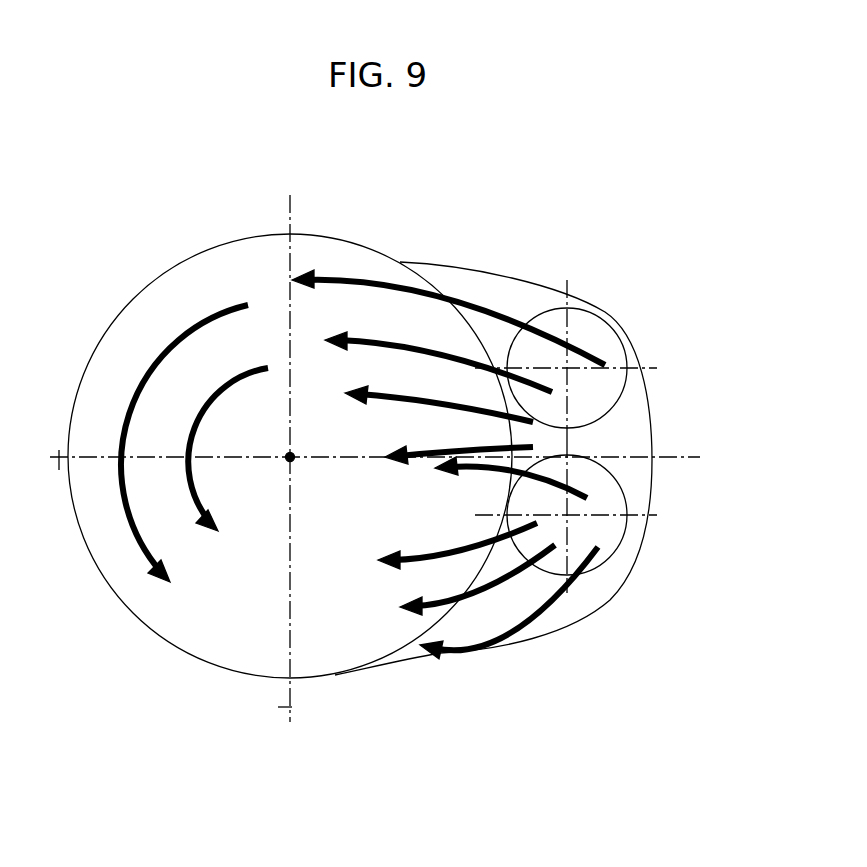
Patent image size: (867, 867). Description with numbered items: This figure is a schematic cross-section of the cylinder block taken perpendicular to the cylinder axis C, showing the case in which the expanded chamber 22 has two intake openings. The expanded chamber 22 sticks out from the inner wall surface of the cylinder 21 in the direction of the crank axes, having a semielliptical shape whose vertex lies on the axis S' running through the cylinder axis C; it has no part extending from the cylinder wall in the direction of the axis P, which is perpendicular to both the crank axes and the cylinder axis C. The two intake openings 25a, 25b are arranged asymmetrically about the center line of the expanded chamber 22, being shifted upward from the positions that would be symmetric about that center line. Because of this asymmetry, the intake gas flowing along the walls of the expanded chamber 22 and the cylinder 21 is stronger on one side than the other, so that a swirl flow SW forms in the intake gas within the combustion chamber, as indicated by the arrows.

The cylinder 21 is at (333, 653).
The expanded chamber 22 is at (597, 590).
The intake opening 25a is at (597, 398).
The intake opening 25b is at (607, 535).
The swirl flow SW is at (160, 350).
The cylinder axis C is at (288, 460).
The axis P is at (290, 707).
The axis S' is at (33, 513).